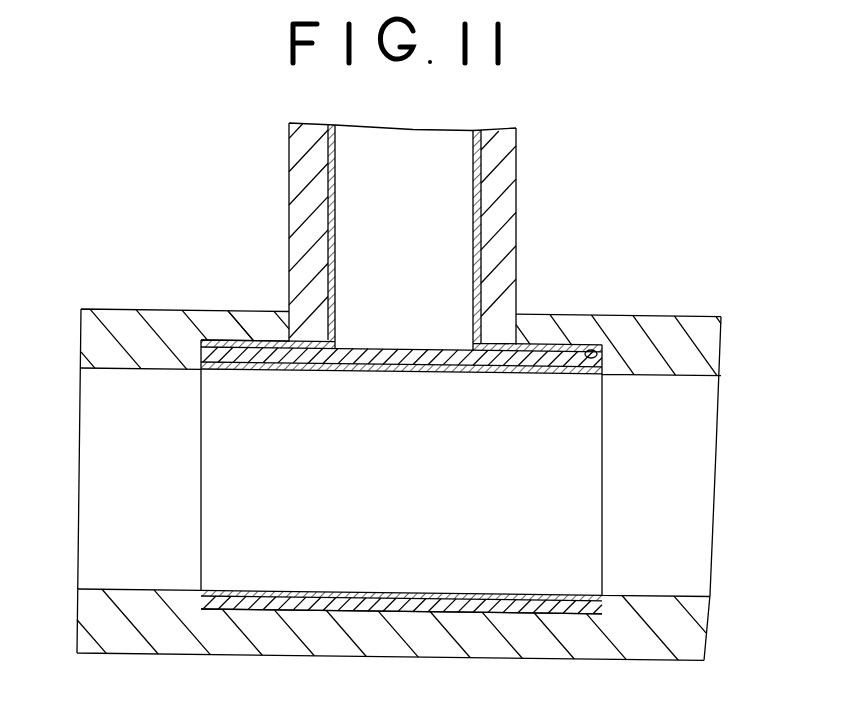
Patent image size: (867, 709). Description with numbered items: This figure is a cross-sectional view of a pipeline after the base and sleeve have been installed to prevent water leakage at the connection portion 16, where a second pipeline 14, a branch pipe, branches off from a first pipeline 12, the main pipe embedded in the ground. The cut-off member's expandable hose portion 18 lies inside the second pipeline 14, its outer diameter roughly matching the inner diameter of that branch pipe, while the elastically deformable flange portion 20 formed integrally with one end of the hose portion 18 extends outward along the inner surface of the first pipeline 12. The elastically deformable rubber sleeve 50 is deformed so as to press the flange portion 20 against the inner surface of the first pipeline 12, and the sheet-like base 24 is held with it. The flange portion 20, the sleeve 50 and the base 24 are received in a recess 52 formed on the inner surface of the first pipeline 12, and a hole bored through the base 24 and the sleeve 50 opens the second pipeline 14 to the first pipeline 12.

The first pipeline 12 is at (690, 330).
The second pipeline 14 is at (517, 174).
The connection portion 16 is at (515, 322).
The hose portion 18 is at (330, 173).
The flange portion 20 is at (238, 343).
The base 24 is at (404, 371).
The sleeve 50 is at (417, 349).
The recess 52 is at (580, 357).